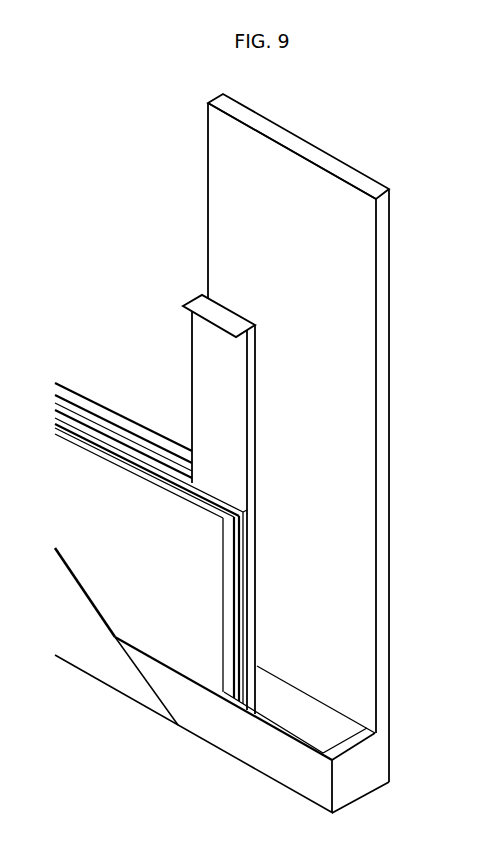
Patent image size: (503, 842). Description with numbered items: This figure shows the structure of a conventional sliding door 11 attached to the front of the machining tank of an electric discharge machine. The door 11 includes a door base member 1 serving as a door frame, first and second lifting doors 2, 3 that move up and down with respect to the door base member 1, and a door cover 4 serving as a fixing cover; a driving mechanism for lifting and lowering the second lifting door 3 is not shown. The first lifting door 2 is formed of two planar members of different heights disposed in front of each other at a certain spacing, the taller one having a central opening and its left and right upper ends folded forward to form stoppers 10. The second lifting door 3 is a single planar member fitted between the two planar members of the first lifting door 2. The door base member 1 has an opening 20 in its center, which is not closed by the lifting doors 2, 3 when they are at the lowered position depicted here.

The door base member 1 is at (67, 383).
The first lifting door 2 is at (192, 343).
The second lifting door 3 is at (242, 517).
The door cover 4 is at (138, 703).
The stopper 10 is at (253, 328).
The door 11 is at (72, 645).
The opening 20 is at (173, 170).